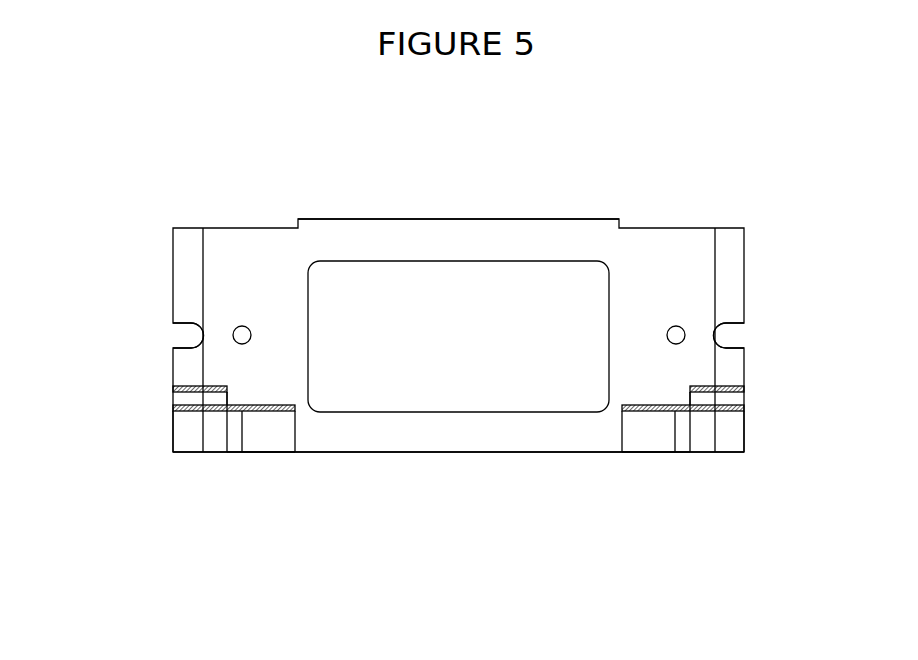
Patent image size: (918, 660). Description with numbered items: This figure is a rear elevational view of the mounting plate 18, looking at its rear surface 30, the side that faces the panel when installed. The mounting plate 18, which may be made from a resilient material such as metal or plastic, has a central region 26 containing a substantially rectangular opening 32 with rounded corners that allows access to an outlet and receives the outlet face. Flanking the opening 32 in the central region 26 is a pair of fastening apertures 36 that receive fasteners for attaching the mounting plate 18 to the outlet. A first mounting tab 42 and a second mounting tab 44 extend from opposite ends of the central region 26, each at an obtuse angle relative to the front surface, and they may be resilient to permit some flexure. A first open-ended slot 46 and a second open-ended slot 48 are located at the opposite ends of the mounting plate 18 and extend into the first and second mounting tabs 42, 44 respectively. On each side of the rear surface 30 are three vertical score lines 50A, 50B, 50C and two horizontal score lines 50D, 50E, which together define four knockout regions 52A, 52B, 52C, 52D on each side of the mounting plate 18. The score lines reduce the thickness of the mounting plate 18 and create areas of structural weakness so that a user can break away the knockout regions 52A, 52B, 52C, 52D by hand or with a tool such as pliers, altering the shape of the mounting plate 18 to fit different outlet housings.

The mounting plate 18 is at (377, 528).
The central region 26 is at (402, 227).
The rear surface 30 is at (462, 444).
The opening 32 is at (484, 395).
The fastening apertures 36 is at (242, 326).
The first mounting tab 42 is at (182, 257).
The second mounting tab 44 is at (738, 242).
The first open-ended slot 46 is at (201, 335).
The second open-ended slot 48 is at (716, 336).
The vertical score line 50A is at (225, 433).
The vertical score line 50B is at (241, 437).
The vertical score line 50C is at (293, 441).
The horizontal score line 50D is at (178, 389).
The horizontal score line 50E is at (180, 431).
The knockout region 52A is at (170, 452).
The knockout region 52B is at (232, 437).
The knockout region 52C is at (267, 442).
The knockout region 52D is at (178, 403).